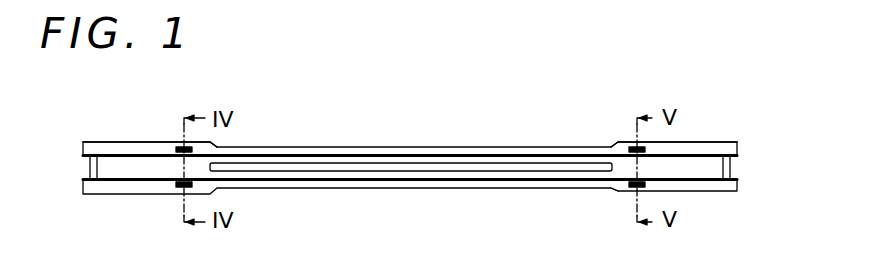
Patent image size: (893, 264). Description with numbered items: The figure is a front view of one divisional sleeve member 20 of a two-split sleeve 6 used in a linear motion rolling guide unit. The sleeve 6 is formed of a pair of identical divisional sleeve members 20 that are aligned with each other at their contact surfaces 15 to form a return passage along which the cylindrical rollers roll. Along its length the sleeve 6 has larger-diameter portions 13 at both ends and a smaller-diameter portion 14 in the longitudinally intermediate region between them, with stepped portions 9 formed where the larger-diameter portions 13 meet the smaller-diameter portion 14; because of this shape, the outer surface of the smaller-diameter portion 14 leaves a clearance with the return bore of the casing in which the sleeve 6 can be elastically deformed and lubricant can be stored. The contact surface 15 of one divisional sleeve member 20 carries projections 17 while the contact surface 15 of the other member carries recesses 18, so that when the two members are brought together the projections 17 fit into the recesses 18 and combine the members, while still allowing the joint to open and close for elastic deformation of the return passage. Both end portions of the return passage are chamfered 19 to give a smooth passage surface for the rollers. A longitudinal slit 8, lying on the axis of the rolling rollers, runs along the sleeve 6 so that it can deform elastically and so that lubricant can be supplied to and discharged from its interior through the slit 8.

The sleeve 6 is at (542, 146).
The slit 8 is at (398, 168).
The stepped portion 9 is at (214, 148).
The larger-diameter portion 13 is at (143, 142).
The smaller-diameter portion 14 is at (433, 146).
The contact surface 15 is at (251, 186).
The projection 17 is at (178, 186).
The recess 18 is at (630, 188).
The chamfer 19 is at (89, 168).
The divisional sleeve member 20 is at (503, 188).